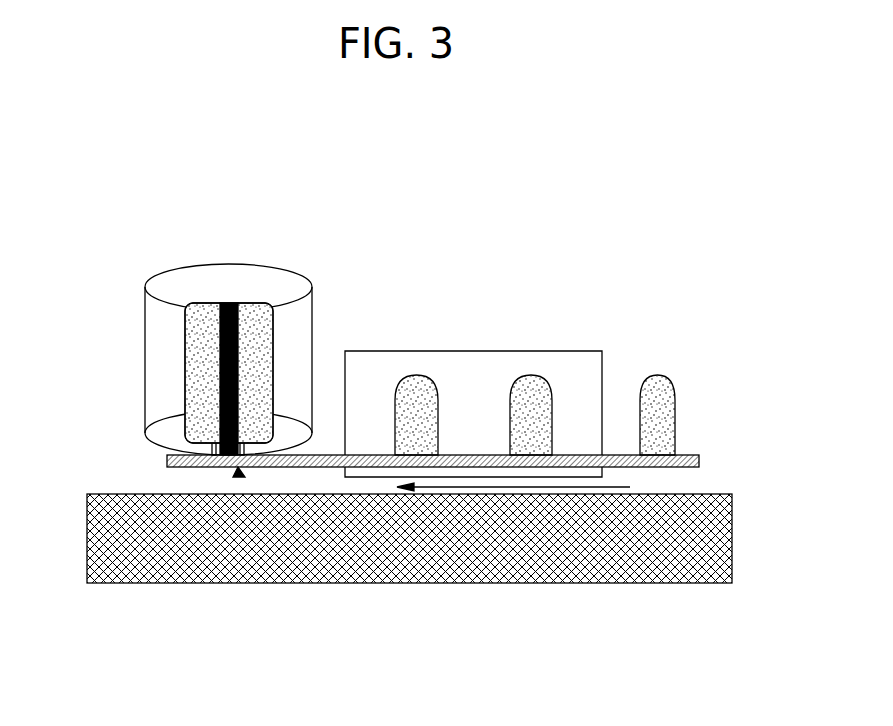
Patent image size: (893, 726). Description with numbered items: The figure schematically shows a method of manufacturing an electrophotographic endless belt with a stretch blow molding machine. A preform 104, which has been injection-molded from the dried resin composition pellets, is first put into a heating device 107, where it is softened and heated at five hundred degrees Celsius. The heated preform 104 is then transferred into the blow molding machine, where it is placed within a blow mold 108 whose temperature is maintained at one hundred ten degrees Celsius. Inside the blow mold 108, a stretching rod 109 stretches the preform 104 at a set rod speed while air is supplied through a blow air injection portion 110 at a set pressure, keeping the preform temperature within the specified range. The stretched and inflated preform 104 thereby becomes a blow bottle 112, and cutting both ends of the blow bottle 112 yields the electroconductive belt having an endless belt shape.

The preform 104 is at (665, 400).
The heating device 107 is at (452, 362).
The blow mold 108 is at (287, 288).
The stretching rod 109 is at (222, 343).
The blow air injection portion 110 is at (240, 476).
The blow bottle 112 is at (197, 393).